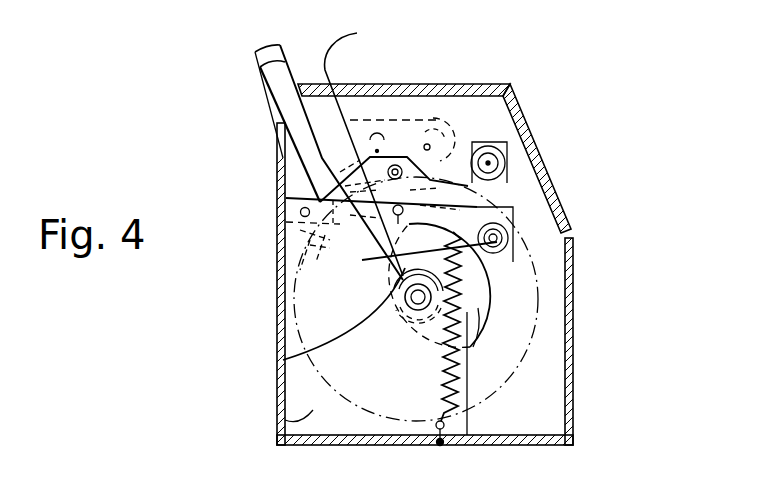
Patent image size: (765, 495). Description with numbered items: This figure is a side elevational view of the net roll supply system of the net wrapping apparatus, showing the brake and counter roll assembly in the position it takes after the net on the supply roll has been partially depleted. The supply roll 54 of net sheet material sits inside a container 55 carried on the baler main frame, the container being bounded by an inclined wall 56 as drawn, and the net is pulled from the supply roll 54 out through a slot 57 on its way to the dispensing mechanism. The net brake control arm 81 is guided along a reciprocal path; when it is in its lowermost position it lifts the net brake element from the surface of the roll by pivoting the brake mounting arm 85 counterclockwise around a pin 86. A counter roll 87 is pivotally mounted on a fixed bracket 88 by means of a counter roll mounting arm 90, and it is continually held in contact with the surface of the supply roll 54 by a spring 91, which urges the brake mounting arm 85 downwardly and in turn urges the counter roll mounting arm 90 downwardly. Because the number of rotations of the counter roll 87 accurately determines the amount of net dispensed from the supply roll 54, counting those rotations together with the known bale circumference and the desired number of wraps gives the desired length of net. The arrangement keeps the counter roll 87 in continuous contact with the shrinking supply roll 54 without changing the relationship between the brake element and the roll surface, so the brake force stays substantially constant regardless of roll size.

The supply roll 54 is at (495, 324).
The container 55 is at (575, 276).
The inclined wall 56 is at (518, 102).
The slot 57 is at (277, 145).
The net brake control arm 81 is at (268, 88).
The brake mounting arm 85 is at (283, 360).
The pin 86 is at (300, 292).
The counter roll 87 is at (467, 189).
The fixed bracket 88 is at (285, 420).
The counter roll mounting arm 90 is at (364, 148).
The spring 91 is at (455, 378).